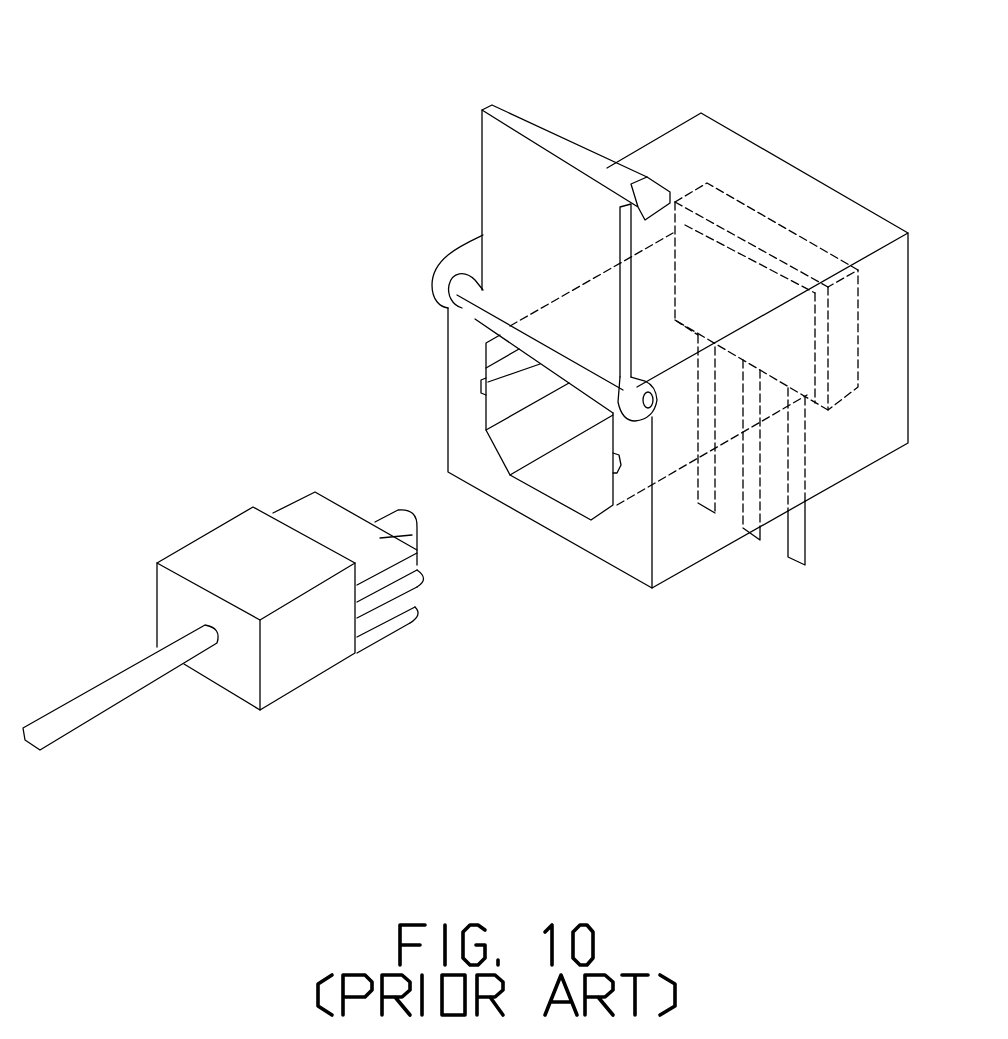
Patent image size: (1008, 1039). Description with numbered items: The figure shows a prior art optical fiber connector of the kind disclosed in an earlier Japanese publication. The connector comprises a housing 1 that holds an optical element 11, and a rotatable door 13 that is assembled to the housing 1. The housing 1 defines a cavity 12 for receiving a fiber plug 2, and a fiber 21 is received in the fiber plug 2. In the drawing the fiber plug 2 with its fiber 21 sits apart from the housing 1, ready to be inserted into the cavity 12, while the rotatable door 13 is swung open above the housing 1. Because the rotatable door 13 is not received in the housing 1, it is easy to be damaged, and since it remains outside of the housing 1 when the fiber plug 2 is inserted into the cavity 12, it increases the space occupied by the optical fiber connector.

The housing 1 is at (678, 148).
The optical element 11 is at (798, 255).
The cavity 12 is at (560, 487).
The rotatable door 13 is at (515, 145).
The fiber plug 2 is at (220, 553).
The fiber 21 is at (127, 680).